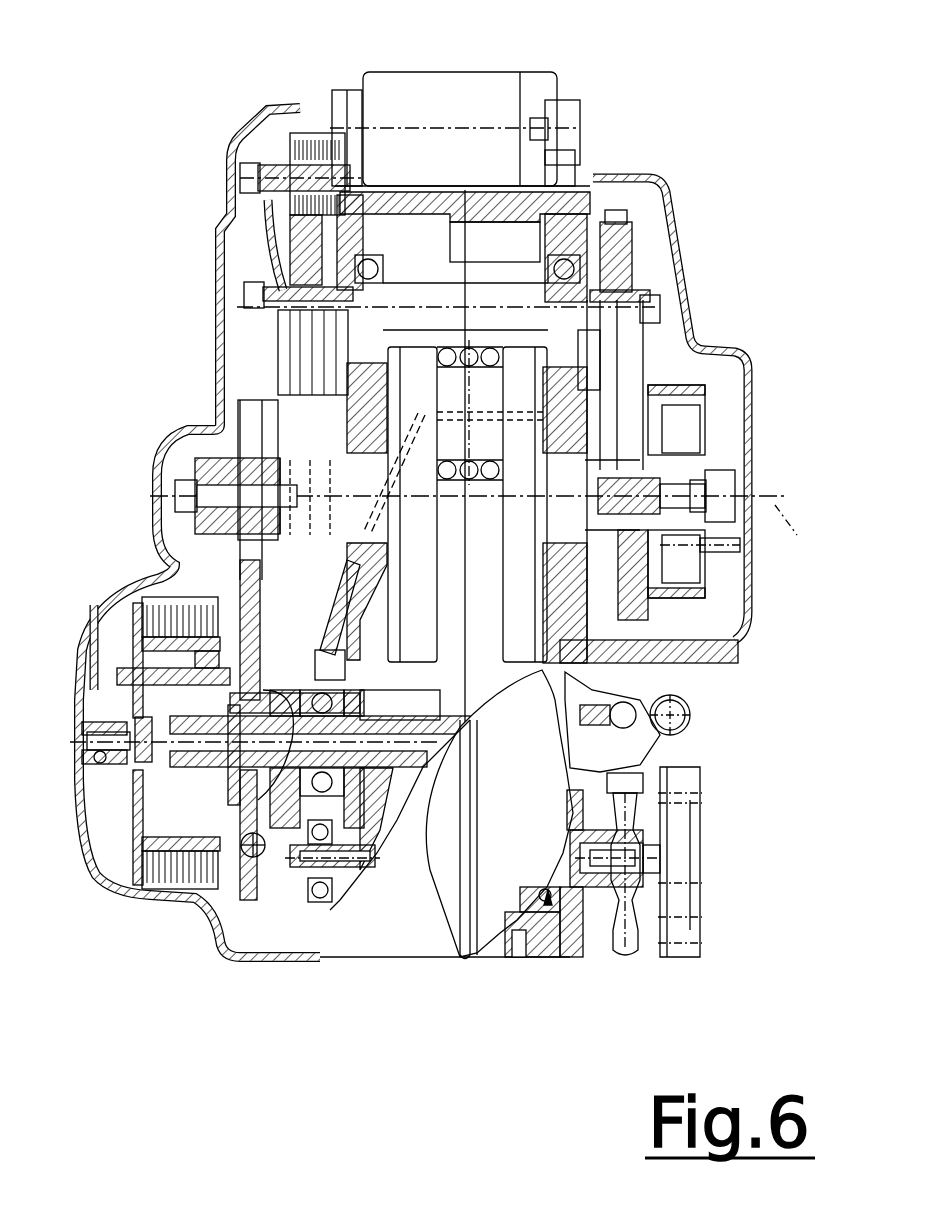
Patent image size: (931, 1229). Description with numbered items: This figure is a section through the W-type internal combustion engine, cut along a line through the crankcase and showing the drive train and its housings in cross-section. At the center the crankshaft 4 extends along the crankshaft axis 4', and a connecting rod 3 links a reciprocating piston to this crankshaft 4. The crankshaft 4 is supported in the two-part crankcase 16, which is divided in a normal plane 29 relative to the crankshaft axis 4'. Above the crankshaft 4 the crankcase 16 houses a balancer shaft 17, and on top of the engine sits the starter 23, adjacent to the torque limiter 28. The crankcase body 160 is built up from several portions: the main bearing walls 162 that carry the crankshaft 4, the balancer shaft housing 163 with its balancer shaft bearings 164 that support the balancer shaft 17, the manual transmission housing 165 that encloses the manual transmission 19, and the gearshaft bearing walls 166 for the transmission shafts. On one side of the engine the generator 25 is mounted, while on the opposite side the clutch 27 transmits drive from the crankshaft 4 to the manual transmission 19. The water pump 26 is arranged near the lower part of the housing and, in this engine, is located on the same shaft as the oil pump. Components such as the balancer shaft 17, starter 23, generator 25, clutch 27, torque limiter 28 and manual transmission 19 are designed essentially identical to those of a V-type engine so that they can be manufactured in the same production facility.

The connecting rod 3 is at (468, 487).
The crankshaft 4 is at (455, 504).
The crankshaft axis 4' is at (485, 533).
The crankcase 16 is at (445, 940).
The balancer shaft 17 is at (432, 287).
The manual transmission 19 is at (548, 940).
The starter 23 is at (485, 88).
The generator 25 is at (700, 417).
The water pump 26 is at (693, 706).
The clutch 27 is at (160, 890).
The torque limiter 28 is at (285, 143).
The normal plane 29 is at (465, 265).
The crankcase body 160 is at (400, 938).
The main bearing walls 162 is at (577, 410).
The balancer shaft housing 163 is at (612, 175).
The balancer shaft bearings 164 is at (610, 232).
The manual transmission housing 165 is at (305, 958).
The gearshaft bearing walls 166 is at (318, 660).